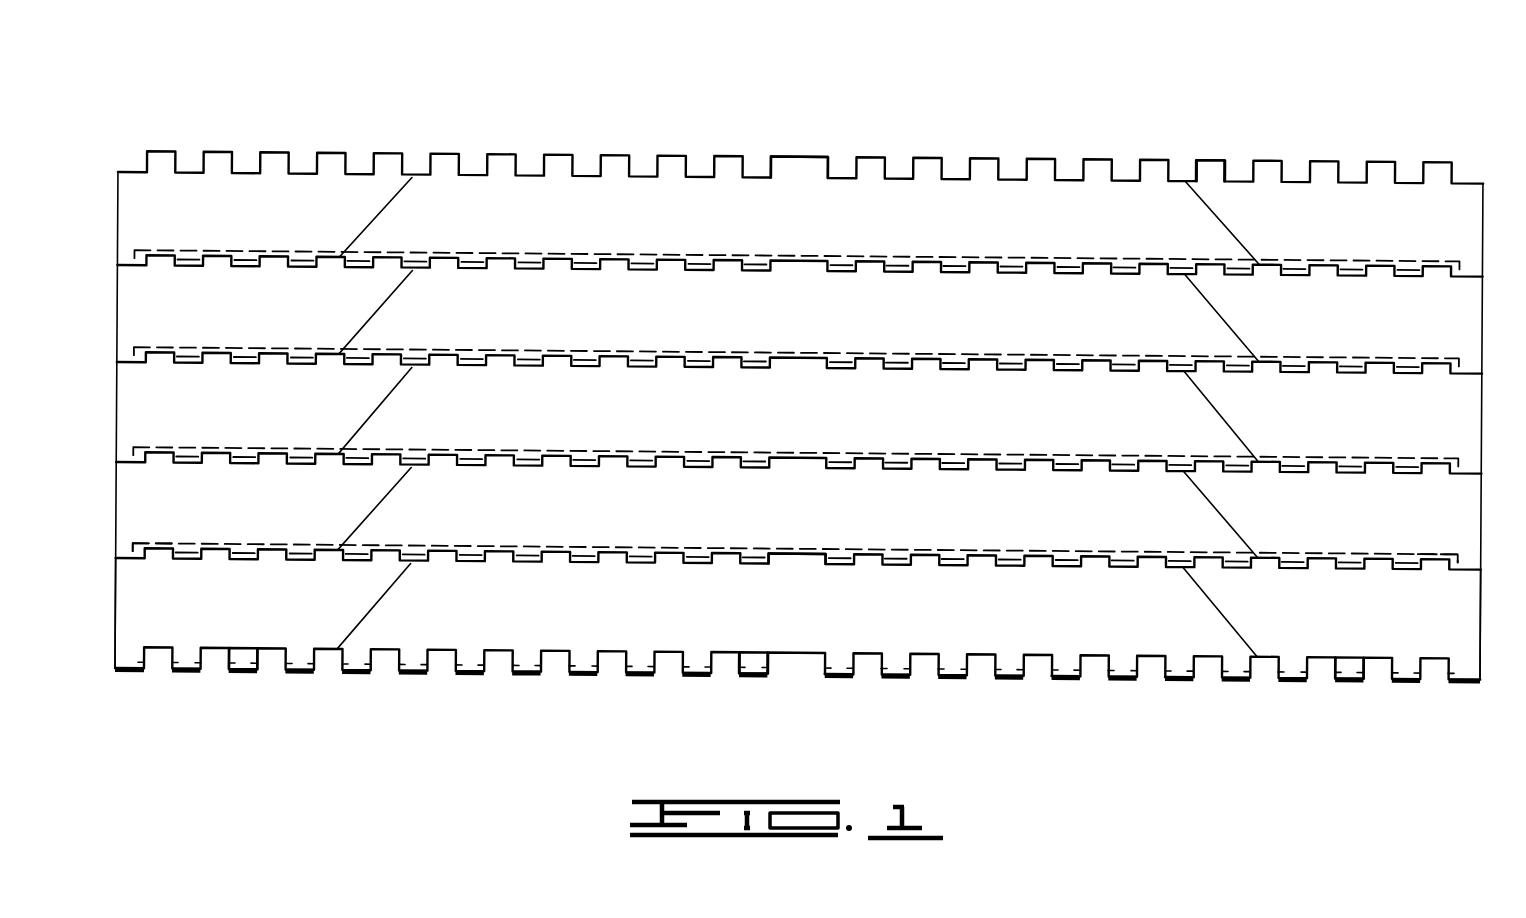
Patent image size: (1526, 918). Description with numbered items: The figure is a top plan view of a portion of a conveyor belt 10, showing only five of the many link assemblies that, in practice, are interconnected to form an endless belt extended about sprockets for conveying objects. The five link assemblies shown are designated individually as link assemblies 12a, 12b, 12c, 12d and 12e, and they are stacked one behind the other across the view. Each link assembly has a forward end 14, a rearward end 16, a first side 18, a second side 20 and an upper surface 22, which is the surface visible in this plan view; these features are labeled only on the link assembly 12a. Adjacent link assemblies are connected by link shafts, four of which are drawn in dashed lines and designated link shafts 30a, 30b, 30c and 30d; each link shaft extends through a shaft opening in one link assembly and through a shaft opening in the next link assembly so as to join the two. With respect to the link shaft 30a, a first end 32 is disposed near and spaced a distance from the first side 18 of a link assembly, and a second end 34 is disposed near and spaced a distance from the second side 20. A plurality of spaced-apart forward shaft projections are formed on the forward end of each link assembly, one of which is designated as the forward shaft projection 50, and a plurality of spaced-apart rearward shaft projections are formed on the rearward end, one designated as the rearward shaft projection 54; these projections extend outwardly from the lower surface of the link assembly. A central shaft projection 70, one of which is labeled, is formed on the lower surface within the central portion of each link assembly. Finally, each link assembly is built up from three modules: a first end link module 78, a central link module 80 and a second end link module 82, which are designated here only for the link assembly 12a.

The conveyor belt 10 is at (982, 85).
The link assembly 12a is at (1487, 647).
The link assembly 12b is at (1487, 540).
The link assembly 12c is at (1487, 447).
The link assembly 12d is at (1487, 345).
The link assembly 12e is at (1490, 227).
The forward end 14 is at (793, 553).
The rearward end 16 is at (837, 678).
The first side 18 is at (116, 622).
The second side 20 is at (1483, 596).
The upper surface 22 is at (1090, 622).
The link shaft 30a is at (950, 553).
The link shaft 30b is at (955, 455).
The link shaft 30c is at (957, 355).
The link shaft 30d is at (1012, 258).
The first end 32 is at (158, 545).
The second end 34 is at (1430, 558).
The forward shaft projection 50 is at (1212, 157).
The rearward shaft projection 54 is at (1182, 685).
The central shaft projection 70 is at (795, 155).
The first end link module 78 is at (242, 632).
The central link module 80 is at (747, 635).
The second end link module 82 is at (1350, 648).